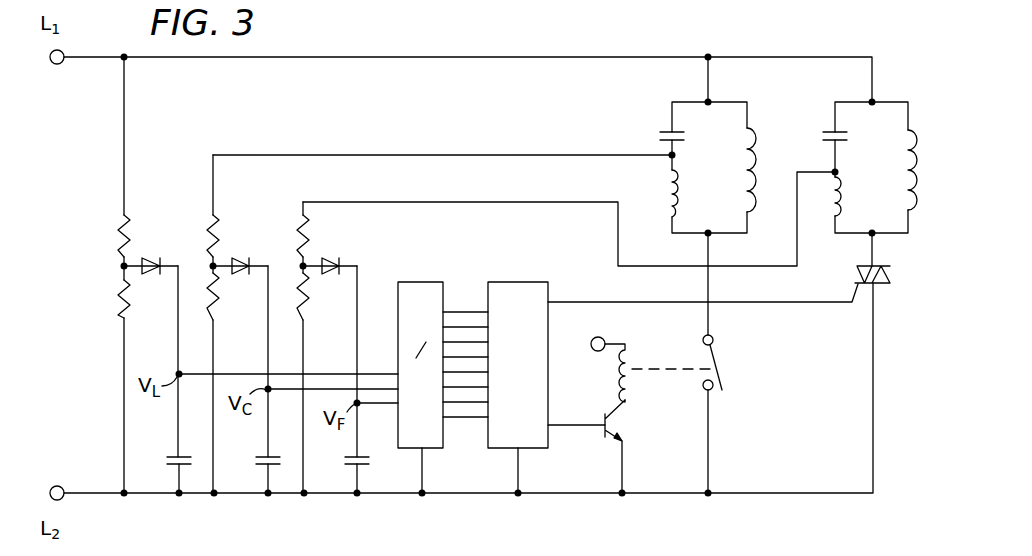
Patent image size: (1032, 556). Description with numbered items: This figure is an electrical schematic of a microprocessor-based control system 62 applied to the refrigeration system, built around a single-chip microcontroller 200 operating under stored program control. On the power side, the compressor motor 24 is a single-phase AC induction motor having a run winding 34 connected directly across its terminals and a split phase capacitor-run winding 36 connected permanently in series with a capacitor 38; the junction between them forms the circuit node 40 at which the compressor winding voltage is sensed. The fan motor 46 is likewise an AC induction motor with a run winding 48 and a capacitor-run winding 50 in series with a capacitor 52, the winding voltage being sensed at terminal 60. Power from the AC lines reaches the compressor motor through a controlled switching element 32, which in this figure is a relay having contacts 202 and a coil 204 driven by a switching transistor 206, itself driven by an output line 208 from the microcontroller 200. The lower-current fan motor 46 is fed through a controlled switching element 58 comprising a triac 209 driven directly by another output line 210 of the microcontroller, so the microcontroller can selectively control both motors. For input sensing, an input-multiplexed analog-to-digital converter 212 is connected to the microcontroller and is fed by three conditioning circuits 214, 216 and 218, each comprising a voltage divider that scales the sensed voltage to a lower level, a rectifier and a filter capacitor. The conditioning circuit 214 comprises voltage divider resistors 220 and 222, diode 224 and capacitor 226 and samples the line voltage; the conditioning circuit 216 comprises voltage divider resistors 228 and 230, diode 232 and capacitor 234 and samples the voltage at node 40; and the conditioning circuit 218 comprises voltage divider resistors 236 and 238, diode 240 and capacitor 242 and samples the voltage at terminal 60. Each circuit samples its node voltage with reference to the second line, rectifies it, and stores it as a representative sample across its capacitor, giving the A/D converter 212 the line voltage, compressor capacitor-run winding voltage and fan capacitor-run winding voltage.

The voltage divider resistor 220 is at (128, 219).
The voltage divider resistor 222 is at (120, 291).
The diode 224 is at (148, 258).
The capacitor 226 is at (172, 456).
The conditioning circuit 214 is at (162, 359).
The voltage divider resistor 228 is at (216, 222).
The voltage divider resistor 230 is at (216, 300).
The diode 232 is at (238, 258).
The conditioning circuit 216 is at (258, 357).
The capacitor 234 is at (262, 468).
The voltage divider resistor 236 is at (305, 222).
The voltage divider resistor 238 is at (306, 300).
The diode 240 is at (326, 258).
The conditioning circuit 218 is at (343, 367).
The capacitor 242 is at (348, 468).
The control system 62 is at (443, 236).
The analog-to-digital converter 212 is at (412, 282).
The microcontroller 200 is at (507, 282).
The output line 210 is at (610, 300).
The output line 208 is at (570, 423).
The switching transistor 206 is at (601, 437).
The coil 204 is at (630, 356).
The contacts 202 is at (727, 371).
The controlled switching element 32 is at (690, 390).
The compressor motor 24 is at (727, 139).
The capacitor 38 is at (678, 145).
The capacitor-run winding 36 is at (680, 190).
The run winding 34 is at (752, 141).
The circuit node 40 is at (670, 157).
The fan motor 46 is at (890, 134).
The capacitor 52 is at (843, 145).
The capacitor-run winding 50 is at (843, 188).
The run winding 48 is at (915, 145).
The terminal 60 is at (832, 175).
The triac 209 is at (890, 276).
The controlled switching element 58 is at (857, 308).